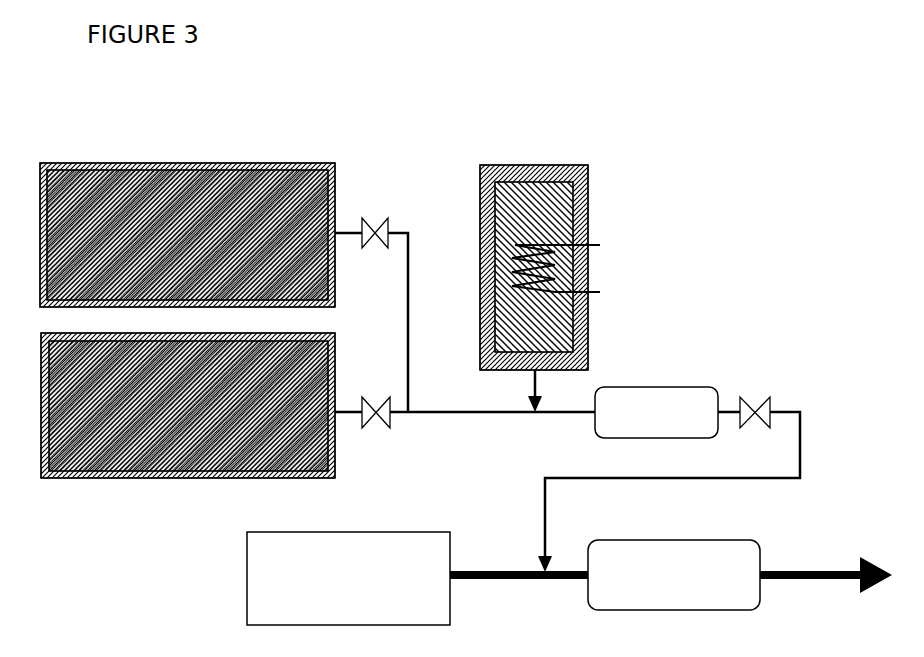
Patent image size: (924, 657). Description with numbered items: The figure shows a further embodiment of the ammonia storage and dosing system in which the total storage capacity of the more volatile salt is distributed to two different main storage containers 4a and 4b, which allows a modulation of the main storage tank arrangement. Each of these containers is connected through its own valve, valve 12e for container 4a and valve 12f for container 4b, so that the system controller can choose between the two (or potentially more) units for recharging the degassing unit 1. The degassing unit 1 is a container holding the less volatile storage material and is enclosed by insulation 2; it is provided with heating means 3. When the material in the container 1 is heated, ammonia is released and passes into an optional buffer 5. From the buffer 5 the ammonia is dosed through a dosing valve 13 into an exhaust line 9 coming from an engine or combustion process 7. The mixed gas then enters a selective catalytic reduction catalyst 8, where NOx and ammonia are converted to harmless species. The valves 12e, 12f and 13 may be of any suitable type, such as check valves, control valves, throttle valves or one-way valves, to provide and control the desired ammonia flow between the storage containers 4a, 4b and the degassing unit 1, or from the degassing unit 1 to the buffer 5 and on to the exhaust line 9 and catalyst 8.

The container 1 is at (534, 267).
The insulation 2 is at (348, 177).
The heating means 3 is at (574, 263).
The container 4a is at (187, 235).
The container 4b is at (188, 405).
The buffer 5 is at (656, 412).
The engine or combustion process 7 is at (348, 578).
The selective catalytic reduction catalyst 8 is at (674, 575).
The exhaust line 9 is at (671, 581).
The valve 12e is at (371, 315).
The valve 12f is at (465, 428).
The dosing valve 13 is at (669, 473).